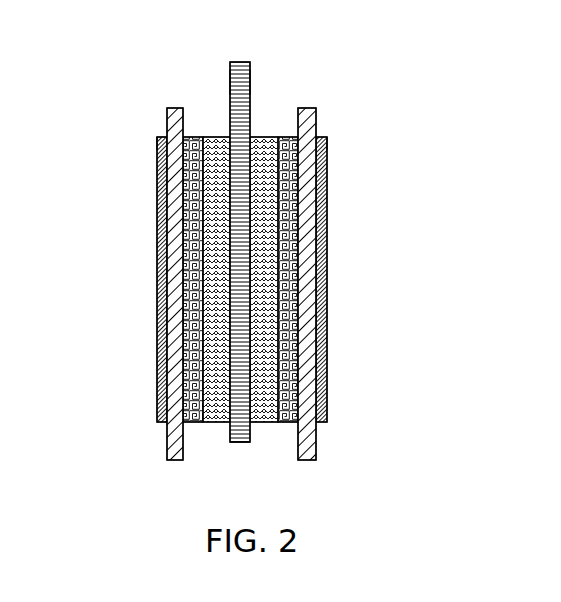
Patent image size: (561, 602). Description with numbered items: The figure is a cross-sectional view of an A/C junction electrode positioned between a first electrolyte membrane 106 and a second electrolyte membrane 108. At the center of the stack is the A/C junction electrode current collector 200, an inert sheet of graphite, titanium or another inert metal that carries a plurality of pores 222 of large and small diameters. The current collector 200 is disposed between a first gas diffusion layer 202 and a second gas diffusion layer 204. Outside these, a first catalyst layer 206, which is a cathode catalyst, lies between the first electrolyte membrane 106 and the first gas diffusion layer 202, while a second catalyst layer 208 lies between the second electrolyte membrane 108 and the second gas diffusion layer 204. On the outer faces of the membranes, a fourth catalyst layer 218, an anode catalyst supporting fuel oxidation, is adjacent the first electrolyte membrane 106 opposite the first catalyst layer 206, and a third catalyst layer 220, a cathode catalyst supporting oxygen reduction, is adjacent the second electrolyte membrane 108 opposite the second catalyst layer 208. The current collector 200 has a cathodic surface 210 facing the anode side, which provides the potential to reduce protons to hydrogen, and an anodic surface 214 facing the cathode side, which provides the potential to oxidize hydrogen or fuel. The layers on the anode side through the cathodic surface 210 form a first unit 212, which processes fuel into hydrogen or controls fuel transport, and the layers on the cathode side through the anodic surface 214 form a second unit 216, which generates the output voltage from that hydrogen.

The first electrolyte membrane 106 is at (173, 462).
The second electrolyte membrane 108 is at (307, 462).
The A/C junction electrode current collector 200 is at (240, 62).
The first gas diffusion layer 202 is at (218, 137).
The second gas diffusion layer 204 is at (265, 137).
The first catalyst layer 206 is at (194, 423).
The second catalyst layer 208 is at (287, 423).
The cathodic surface 210 is at (228, 83).
The first unit 212 is at (147, 85).
The anodic surface 214 is at (253, 82).
The second unit 216 is at (343, 115).
The fourth catalyst layer 218 is at (157, 176).
The third catalyst layer 220 is at (327, 160).
The pores 222 is at (253, 432).